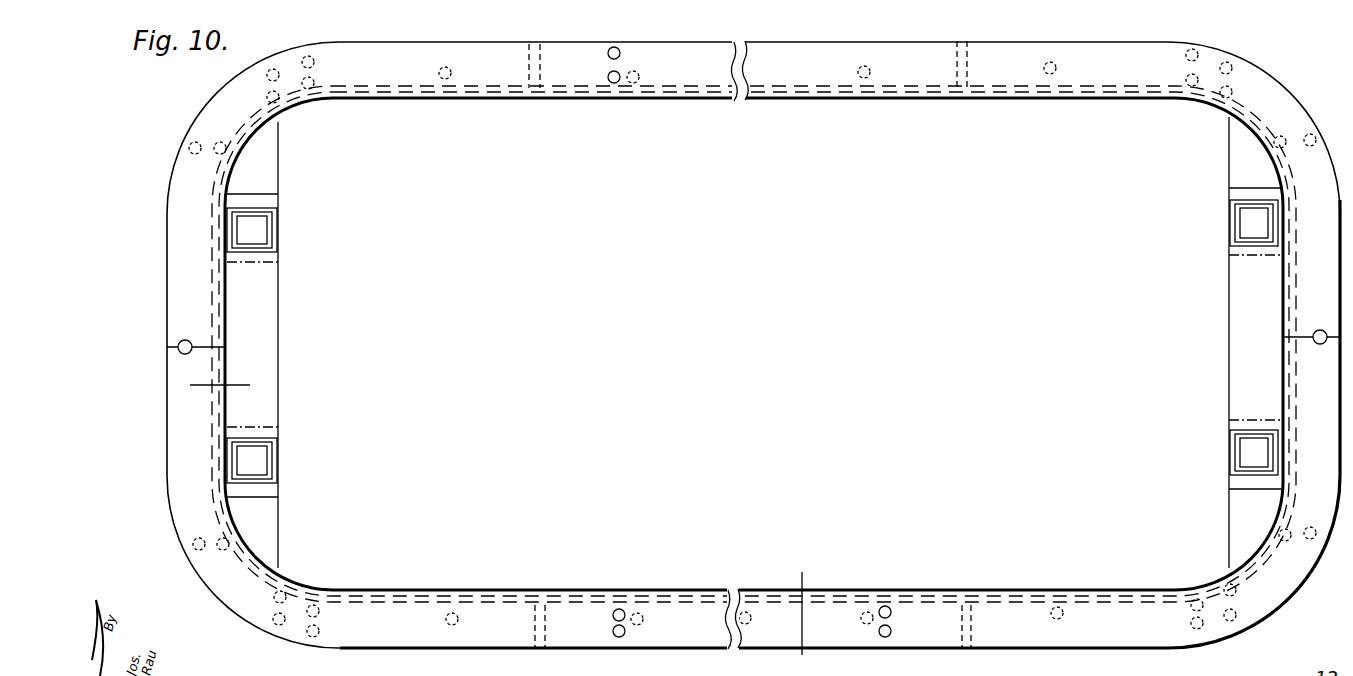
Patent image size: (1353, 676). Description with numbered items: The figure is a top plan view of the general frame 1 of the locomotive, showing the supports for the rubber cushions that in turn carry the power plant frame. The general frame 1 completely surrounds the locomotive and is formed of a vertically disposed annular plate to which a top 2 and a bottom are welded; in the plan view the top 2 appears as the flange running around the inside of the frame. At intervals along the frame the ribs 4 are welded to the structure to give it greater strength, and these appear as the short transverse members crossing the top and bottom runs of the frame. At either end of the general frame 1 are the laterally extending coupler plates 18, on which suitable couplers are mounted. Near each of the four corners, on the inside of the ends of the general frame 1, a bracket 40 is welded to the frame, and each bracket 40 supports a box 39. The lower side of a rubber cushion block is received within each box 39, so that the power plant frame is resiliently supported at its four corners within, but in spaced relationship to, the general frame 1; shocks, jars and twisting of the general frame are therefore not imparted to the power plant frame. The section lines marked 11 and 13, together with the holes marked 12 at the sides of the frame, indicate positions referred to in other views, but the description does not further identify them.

The general frame 1 is at (598, 21).
The top 2 is at (486, 101).
The rib 4 is at (528, 62).
The section line 11- 11 is at (223, 385).
The pivot hole 12 is at (167, 347).
The section line 13- 13 is at (802, 611).
The coupler plate 18 is at (167, 272).
The box 39 is at (273, 233).
The bracket 40 is at (262, 328).